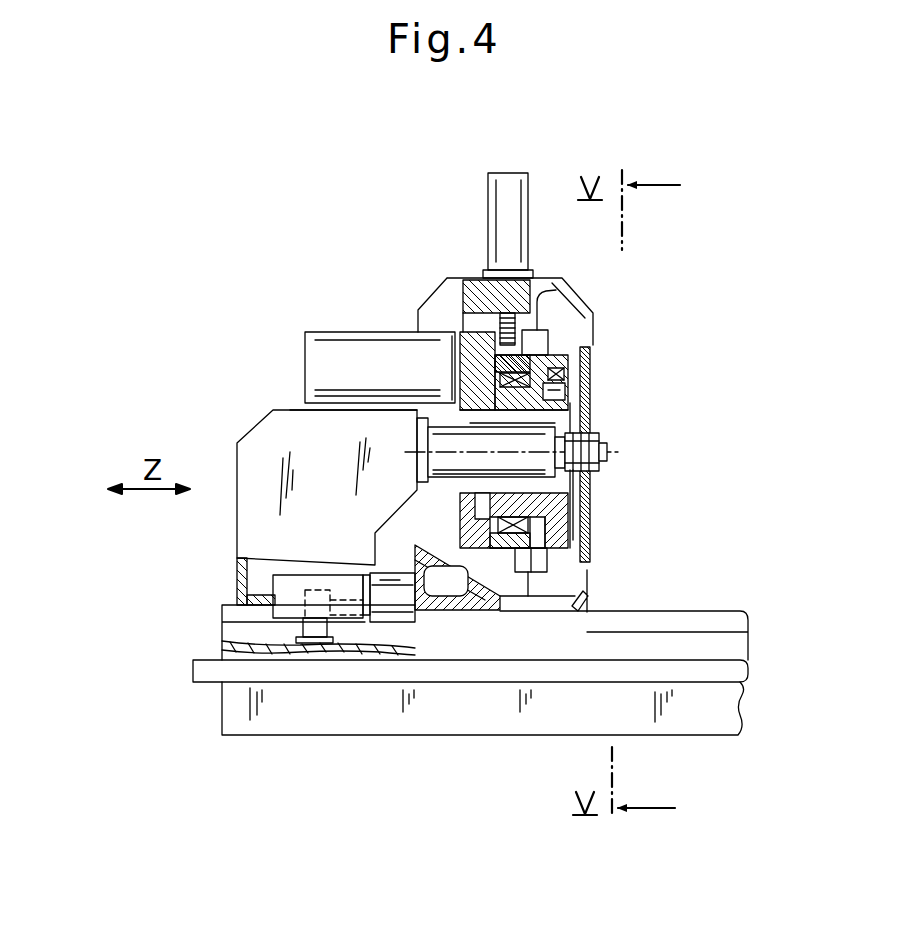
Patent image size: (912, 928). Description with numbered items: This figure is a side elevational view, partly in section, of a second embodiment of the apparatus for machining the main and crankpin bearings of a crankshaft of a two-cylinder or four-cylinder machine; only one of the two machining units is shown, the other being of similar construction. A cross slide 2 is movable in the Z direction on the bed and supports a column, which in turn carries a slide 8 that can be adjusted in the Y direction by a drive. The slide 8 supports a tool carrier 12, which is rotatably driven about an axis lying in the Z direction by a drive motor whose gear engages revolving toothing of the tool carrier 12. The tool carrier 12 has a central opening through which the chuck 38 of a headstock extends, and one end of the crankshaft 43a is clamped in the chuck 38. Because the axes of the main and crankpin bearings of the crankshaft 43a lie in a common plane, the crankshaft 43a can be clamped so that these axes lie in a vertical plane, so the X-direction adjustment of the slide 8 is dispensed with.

The cross slide 2 is at (416, 233).
The slide 8 is at (592, 357).
The chuck 38 is at (535, 447).
The crankshaft 43a is at (603, 458).
The tool carrier 12 is at (548, 538).